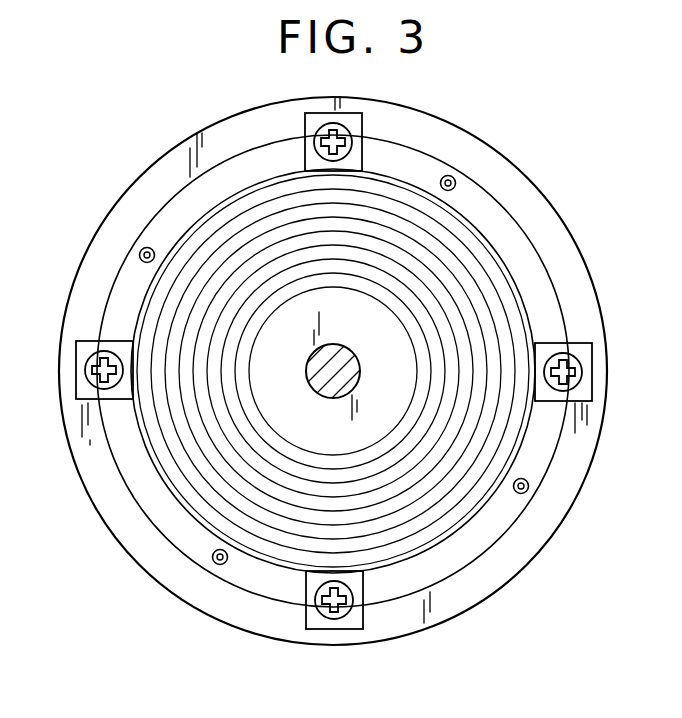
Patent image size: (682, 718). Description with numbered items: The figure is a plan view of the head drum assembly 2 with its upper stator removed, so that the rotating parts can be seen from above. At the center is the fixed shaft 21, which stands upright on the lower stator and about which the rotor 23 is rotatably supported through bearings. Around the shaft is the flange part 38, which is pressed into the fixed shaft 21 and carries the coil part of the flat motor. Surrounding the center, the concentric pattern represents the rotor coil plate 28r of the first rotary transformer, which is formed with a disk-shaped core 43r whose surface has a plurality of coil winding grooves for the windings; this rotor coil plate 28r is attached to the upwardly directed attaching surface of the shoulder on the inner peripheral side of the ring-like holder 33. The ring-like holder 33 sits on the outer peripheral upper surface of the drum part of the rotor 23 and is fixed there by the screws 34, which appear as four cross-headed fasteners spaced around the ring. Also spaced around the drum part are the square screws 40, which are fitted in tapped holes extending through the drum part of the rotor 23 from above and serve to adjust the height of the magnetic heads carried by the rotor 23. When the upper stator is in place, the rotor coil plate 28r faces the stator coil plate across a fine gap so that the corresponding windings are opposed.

The head drum assembly 2 is at (523, 152).
The fixed shaft 21 is at (313, 378).
The rotor 23 is at (562, 250).
The rotor coil plate 28r is at (477, 268).
The ring-like holder 33 is at (528, 308).
The screws 34 is at (348, 138).
The flange part 38 is at (318, 437).
The square screws 40 is at (140, 252).
The core 43r is at (425, 520).